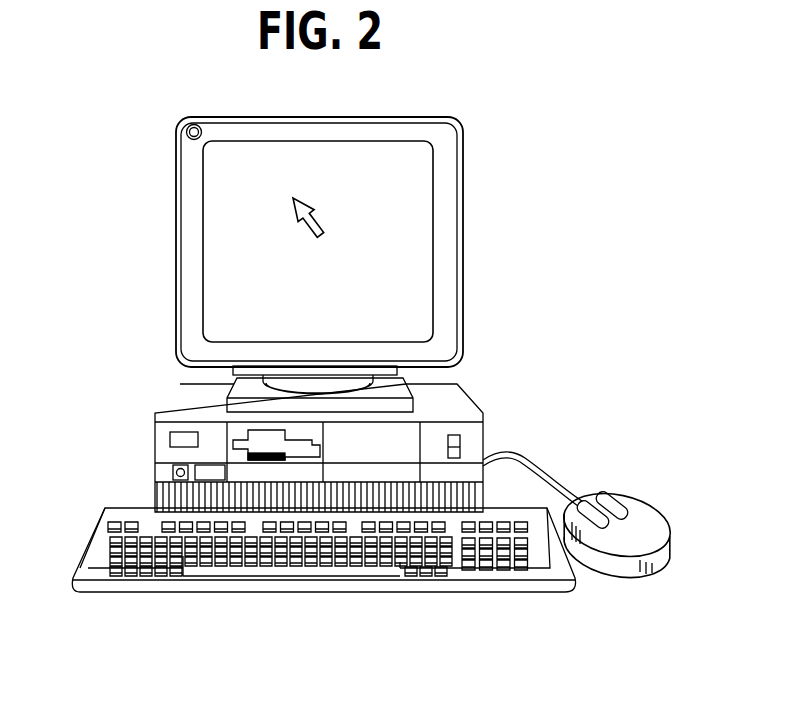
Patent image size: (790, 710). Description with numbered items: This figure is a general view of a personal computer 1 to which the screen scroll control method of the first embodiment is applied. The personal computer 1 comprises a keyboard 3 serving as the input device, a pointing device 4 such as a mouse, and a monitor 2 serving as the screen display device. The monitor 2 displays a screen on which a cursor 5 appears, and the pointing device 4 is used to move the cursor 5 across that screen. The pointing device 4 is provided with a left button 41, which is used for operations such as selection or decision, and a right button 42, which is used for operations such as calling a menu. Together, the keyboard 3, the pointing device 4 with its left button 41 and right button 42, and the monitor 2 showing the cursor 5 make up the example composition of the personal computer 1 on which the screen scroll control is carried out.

The personal computer 1 is at (352, 117).
The monitor 2 is at (417, 196).
The keyboard 3 is at (95, 530).
The pointing device 4 is at (603, 510).
The left button 41 is at (587, 503).
The right button 42 is at (620, 503).
The cursor 5 is at (300, 225).